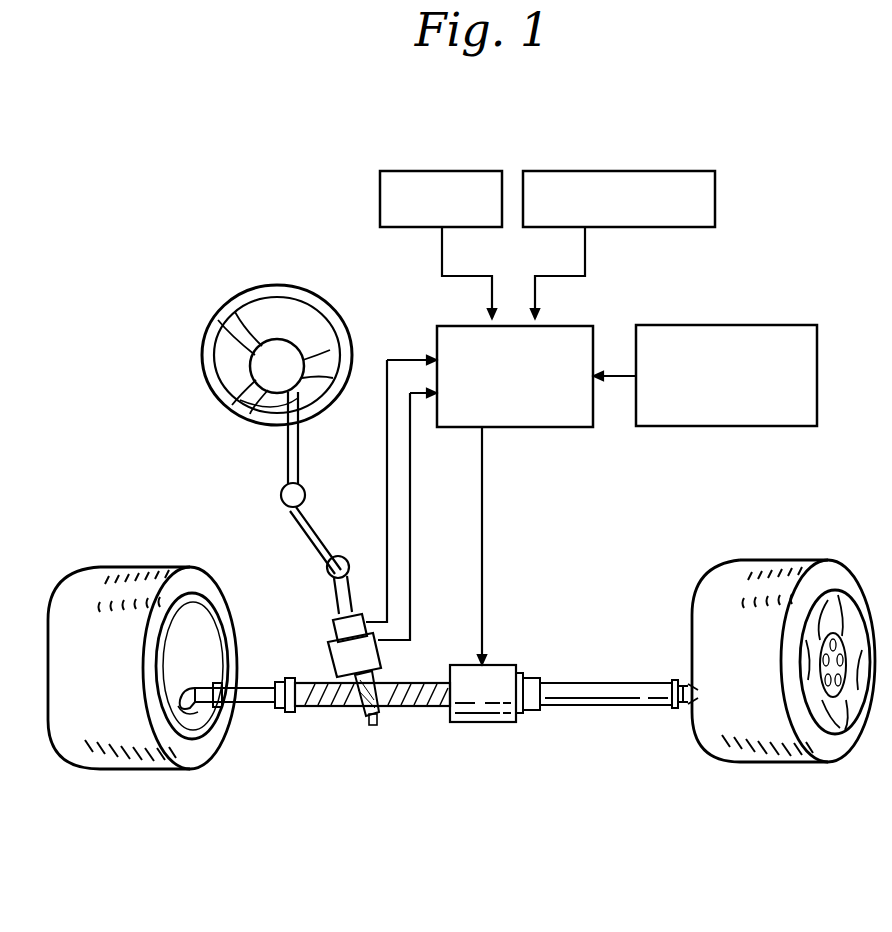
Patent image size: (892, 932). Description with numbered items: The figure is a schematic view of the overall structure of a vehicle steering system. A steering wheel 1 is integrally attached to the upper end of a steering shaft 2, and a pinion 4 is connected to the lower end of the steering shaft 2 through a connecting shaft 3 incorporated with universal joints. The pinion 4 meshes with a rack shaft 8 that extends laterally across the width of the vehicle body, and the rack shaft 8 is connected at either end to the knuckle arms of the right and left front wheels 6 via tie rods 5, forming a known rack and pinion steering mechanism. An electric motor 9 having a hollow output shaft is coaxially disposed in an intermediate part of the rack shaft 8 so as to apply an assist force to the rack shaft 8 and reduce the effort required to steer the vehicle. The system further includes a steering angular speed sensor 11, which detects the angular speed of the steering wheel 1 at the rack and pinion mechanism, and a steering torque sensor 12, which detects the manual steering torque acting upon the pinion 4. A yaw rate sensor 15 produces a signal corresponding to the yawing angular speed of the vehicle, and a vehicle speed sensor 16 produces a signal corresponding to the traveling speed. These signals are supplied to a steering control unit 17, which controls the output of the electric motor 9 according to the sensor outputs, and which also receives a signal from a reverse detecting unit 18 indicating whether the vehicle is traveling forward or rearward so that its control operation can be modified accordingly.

The steering wheel 1 is at (222, 322).
The steering shaft 2 is at (288, 446).
The connecting shaft 3 is at (300, 522).
The pinion 4 is at (360, 714).
The tie rods 5 is at (262, 704).
The front wheels 6 is at (142, 568).
The rack shaft 8 is at (422, 708).
The electric motor 9 is at (497, 722).
The steering angular speed sensor 11 is at (332, 632).
The steering torque sensor 12 is at (336, 662).
The yaw rate sensor 15 is at (450, 170).
The vehicle speed sensor 16 is at (592, 170).
The steering control unit 17 is at (436, 338).
The reverse detecting unit 18 is at (740, 325).